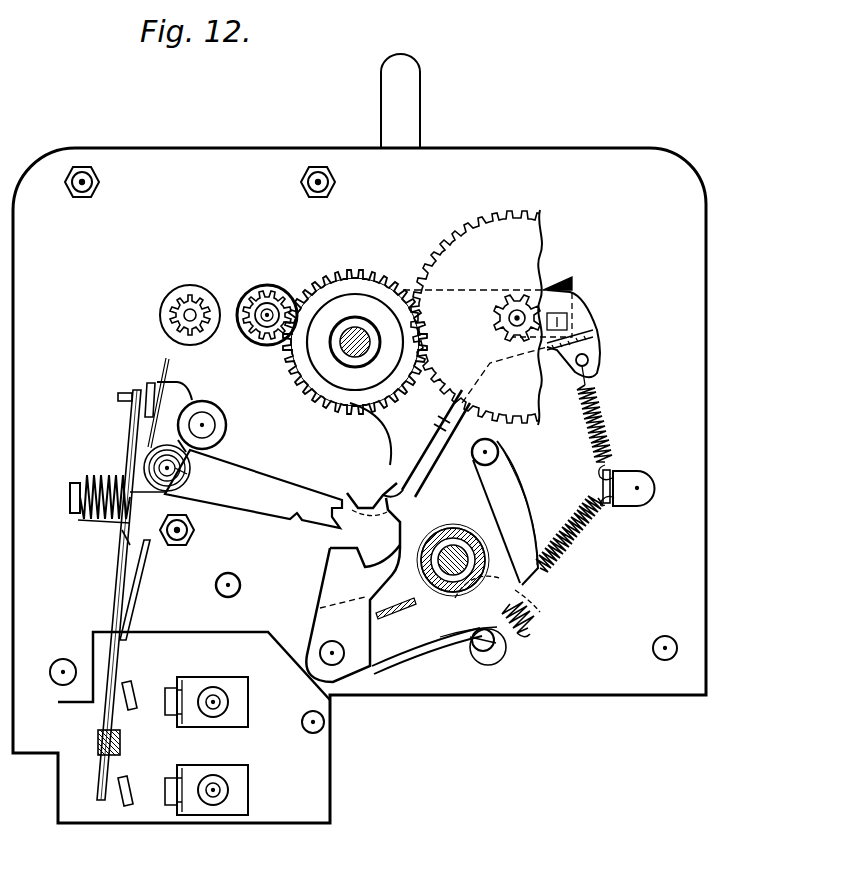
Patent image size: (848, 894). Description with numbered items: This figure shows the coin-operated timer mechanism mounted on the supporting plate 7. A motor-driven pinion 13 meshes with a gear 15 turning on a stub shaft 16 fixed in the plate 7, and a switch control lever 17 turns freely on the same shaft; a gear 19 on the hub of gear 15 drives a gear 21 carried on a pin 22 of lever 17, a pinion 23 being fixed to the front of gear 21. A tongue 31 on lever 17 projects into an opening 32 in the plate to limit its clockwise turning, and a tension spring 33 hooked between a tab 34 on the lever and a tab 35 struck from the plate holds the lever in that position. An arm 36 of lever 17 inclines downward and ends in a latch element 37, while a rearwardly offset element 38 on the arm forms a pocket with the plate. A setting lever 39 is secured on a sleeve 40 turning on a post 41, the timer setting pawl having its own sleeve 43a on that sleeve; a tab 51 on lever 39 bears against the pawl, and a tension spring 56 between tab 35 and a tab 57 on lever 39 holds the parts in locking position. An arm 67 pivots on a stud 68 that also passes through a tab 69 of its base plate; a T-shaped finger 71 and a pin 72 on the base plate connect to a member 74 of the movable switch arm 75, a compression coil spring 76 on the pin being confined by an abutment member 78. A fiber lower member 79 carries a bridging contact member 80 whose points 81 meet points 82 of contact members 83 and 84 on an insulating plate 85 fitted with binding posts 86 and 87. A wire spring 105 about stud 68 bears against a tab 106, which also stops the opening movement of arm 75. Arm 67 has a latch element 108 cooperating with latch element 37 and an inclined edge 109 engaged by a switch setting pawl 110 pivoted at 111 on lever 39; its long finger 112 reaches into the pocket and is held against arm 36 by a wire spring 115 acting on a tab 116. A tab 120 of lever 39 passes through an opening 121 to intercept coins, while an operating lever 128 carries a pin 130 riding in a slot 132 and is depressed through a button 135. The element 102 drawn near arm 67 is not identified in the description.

The supporting plate 7 is at (506, 158).
The pinion 13 is at (267, 284).
The gear 15 is at (328, 268).
The stub shaft 16 is at (353, 352).
The switch control lever 17 is at (583, 307).
The gear 19 is at (370, 293).
The gear 21 is at (525, 238).
The pin 22 is at (517, 313).
The pinion 23 is at (497, 313).
The tongue 31 is at (567, 322).
The opening 32 is at (550, 287).
The tension spring 33 is at (607, 421).
The tab 34 is at (590, 361).
The tab 35 is at (617, 476).
The arm 36 is at (390, 460).
The latch element 37 is at (352, 492).
The rearwardly offset element 38 is at (407, 488).
The setting lever 39 is at (464, 651).
The sleeve 40 is at (443, 537).
The post 41 is at (455, 577).
The sleeve 43a is at (472, 523).
The tab 51 is at (400, 607).
The tension spring 56 is at (577, 557).
The tab 57 is at (517, 648).
The arm 67 is at (258, 471).
The stud 68 is at (187, 473).
The tab 69 is at (148, 448).
The T-shaped finger 71 is at (125, 392).
The pin 72 is at (72, 489).
The member 74 is at (128, 534).
The movable switch arm 75 is at (108, 592).
The compression coil spring 76 is at (92, 476).
The abutment member 78 is at (80, 521).
The lower member 79 is at (120, 650).
The bridging contact member 80 is at (102, 750).
The contact points 81 is at (133, 690).
The points 82 is at (167, 713).
The contact member 83 is at (238, 707).
The contact member 84 is at (240, 783).
The supporting plate 85 is at (320, 755).
The binding post 86 is at (212, 693).
The binding post 87 is at (213, 781).
The projection 102 is at (330, 530).
The wire spring 105 is at (170, 363).
The tab 106 is at (150, 383).
The latch element 108 is at (338, 495).
The inclined edge 109 is at (296, 521).
The switch setting pawl 110 is at (332, 597).
The pivot 111 is at (321, 658).
The finger 112 is at (348, 503).
The wire spring 115 is at (424, 643).
The tab 116 is at (387, 653).
The tab 120 is at (538, 617).
The opening 121 is at (528, 638).
The operating lever 128 is at (505, 470).
The pin 130 is at (498, 452).
The slot 132 is at (523, 503).
The elongated button 135 is at (410, 93).